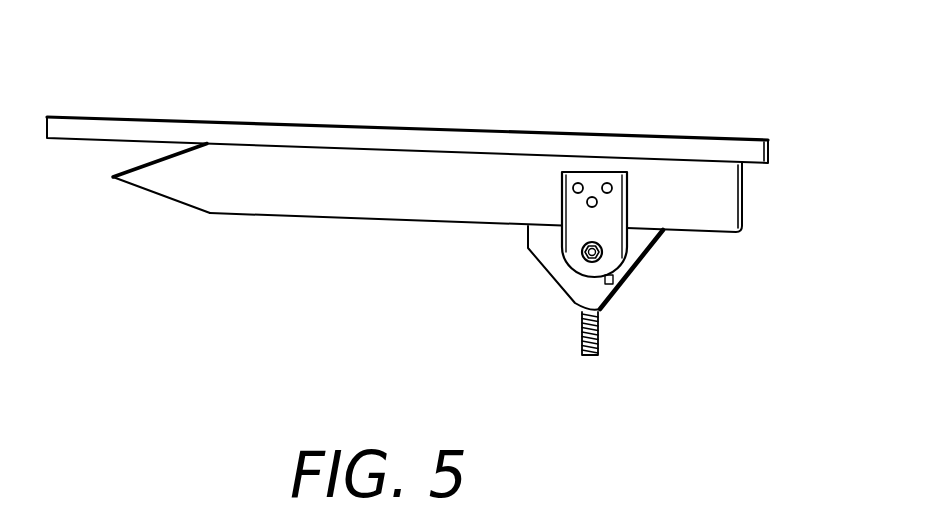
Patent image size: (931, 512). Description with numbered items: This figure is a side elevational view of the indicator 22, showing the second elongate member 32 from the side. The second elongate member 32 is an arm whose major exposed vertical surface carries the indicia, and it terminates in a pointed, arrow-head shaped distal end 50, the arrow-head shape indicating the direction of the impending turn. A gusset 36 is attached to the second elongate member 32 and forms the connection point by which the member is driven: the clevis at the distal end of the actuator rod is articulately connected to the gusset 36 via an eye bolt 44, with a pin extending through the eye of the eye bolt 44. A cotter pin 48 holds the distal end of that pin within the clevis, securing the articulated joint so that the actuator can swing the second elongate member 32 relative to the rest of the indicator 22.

The indicator 22 is at (614, 76).
The second elongate member 32 is at (355, 218).
The gusset 36 is at (627, 220).
The eye bolt 44 is at (603, 257).
The cotter pin 48 is at (618, 297).
The arrow-head shaped distal end 50 is at (172, 200).